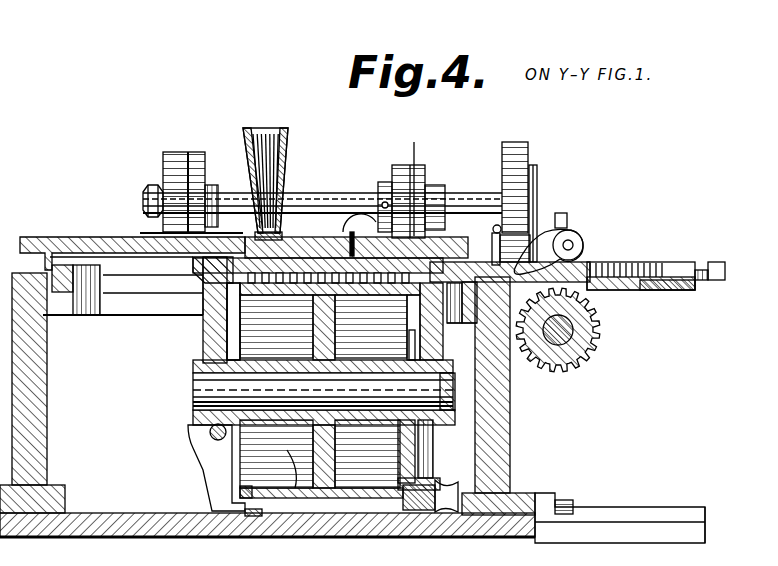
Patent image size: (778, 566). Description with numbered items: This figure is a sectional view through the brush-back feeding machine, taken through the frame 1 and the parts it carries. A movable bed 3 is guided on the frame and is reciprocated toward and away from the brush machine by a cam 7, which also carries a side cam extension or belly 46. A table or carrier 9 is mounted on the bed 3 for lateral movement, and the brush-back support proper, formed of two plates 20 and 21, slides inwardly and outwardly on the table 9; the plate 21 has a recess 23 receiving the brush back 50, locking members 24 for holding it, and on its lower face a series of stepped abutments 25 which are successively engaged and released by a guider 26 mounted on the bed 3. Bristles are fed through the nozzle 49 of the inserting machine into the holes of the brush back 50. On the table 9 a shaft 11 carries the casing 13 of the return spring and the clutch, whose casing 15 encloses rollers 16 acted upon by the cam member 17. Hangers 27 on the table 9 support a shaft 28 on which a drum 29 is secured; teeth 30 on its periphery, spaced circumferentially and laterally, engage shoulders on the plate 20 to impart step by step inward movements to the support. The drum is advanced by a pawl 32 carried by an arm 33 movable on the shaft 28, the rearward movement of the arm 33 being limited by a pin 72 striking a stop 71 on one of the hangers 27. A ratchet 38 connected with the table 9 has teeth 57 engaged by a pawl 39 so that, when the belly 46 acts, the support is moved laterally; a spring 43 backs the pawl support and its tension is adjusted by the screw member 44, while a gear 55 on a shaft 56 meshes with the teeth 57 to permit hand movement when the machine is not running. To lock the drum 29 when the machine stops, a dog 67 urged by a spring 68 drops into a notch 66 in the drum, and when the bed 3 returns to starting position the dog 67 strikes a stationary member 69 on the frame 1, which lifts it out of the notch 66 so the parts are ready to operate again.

The frame 1 is at (49, 412).
The movable bed 3 is at (134, 282).
The cam 7 is at (511, 162).
The table 9 is at (192, 282).
The shaft 11 is at (298, 240).
The casing 13 is at (173, 164).
The clutch casing 15 is at (401, 194).
The rollers 16 is at (408, 176).
The cam member 17 is at (432, 184).
The plate 20 is at (340, 255).
The plate 21 is at (365, 258).
The recess 23 is at (378, 186).
The locking members 24 is at (240, 233).
The abutments 25 is at (72, 258).
The guider 26 is at (44, 258).
The hangers 27 is at (222, 333).
The shaft 28 is at (194, 383).
The drum 29 is at (367, 454).
The teeth 30 is at (276, 454).
The pawl 32 is at (405, 497).
The arm 33 is at (420, 443).
The ratchet 38 is at (654, 262).
The pawl 39 is at (563, 237).
The spring 43 is at (672, 536).
The screw member 44 is at (713, 262).
The cam extension 46 is at (531, 199).
The nozzle 49 is at (287, 160).
The brush back 50 is at (300, 238).
The pinion 55 is at (593, 338).
The shaft 56 is at (562, 346).
The teeth 57 is at (666, 292).
The notch 66 is at (240, 492).
The dog 67 is at (220, 462).
The spring 68 is at (204, 420).
The stationary member 69 is at (254, 517).
The stop 71 is at (447, 392).
The pin 72 is at (415, 350).